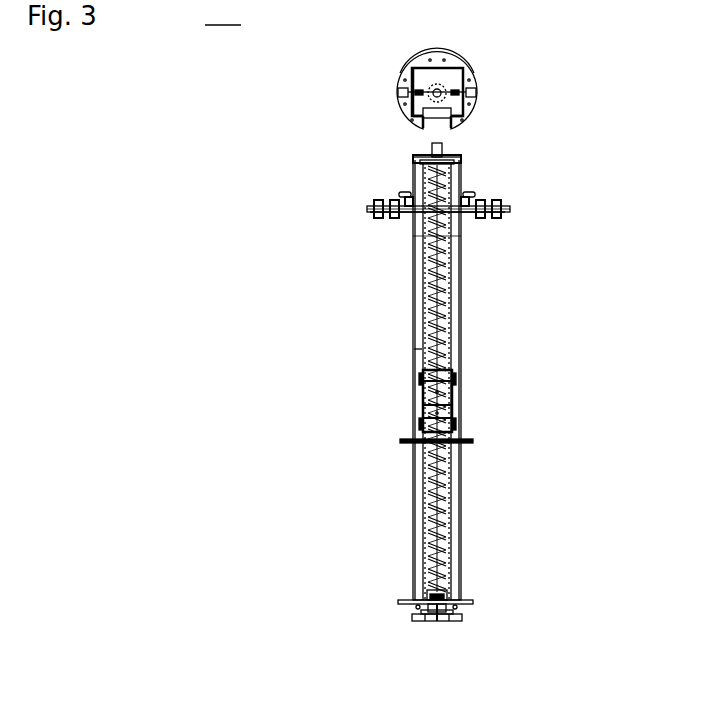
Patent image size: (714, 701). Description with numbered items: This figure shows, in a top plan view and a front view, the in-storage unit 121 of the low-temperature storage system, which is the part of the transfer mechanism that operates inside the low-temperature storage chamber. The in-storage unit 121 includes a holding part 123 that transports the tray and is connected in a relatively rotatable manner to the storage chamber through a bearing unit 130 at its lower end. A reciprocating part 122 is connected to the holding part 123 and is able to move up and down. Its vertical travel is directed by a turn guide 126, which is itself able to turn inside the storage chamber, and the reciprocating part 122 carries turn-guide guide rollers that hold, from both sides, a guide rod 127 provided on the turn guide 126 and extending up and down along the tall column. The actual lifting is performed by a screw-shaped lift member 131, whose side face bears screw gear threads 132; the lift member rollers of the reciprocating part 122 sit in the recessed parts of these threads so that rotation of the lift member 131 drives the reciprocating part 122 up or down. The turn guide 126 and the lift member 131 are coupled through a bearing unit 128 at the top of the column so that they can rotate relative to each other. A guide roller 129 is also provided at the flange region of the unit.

The in-storage unit 121 is at (333, 301).
The reciprocating part 122 is at (430, 404).
The holding part 123 is at (404, 441).
The turn guide 126 is at (425, 58).
The guide rod 127 is at (418, 93).
The bearing unit 128 is at (430, 156).
The guide roller 129 is at (480, 207).
The bearing unit 130 is at (412, 618).
The lift member 131 is at (458, 176).
The screw gear thread 132 is at (432, 317).